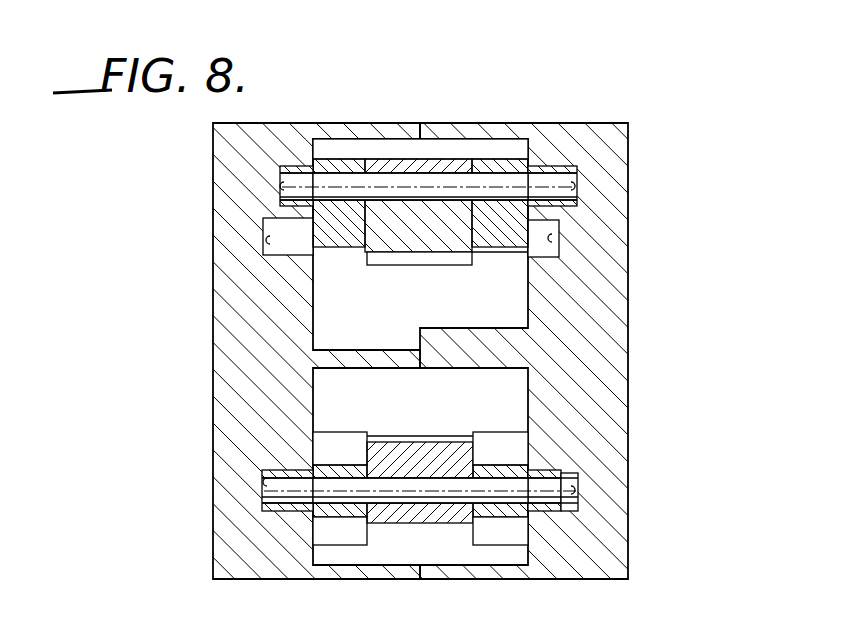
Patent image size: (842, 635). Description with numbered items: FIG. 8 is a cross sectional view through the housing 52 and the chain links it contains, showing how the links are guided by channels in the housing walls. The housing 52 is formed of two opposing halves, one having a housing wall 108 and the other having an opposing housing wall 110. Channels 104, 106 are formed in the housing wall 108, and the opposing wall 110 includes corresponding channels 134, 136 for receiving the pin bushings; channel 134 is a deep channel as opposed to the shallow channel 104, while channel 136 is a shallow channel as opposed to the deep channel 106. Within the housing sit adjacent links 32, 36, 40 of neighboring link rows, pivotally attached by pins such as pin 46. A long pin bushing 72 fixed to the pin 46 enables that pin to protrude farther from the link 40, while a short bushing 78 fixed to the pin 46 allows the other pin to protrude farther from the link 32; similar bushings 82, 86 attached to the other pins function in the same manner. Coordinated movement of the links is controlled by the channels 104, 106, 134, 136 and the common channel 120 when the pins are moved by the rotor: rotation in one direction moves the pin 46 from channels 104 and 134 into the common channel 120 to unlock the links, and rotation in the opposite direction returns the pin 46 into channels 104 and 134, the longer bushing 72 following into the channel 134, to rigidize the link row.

The link 32 is at (500, 162).
The link 36 is at (430, 163).
The link 40 is at (336, 162).
The pin 46 is at (347, 480).
The housing 52 is at (415, 328).
The long pin bushing 72 is at (292, 515).
The short bushing 78 is at (548, 512).
The bushing 82 is at (297, 167).
The bushing 86 is at (556, 168).
The channel 104 is at (554, 238).
The channel 106 is at (575, 186).
The housing wall 108 is at (628, 323).
The housing wall 110 is at (213, 320).
The common channel 120 is at (265, 482).
The channel 134 is at (268, 240).
The channel 136 is at (283, 180).